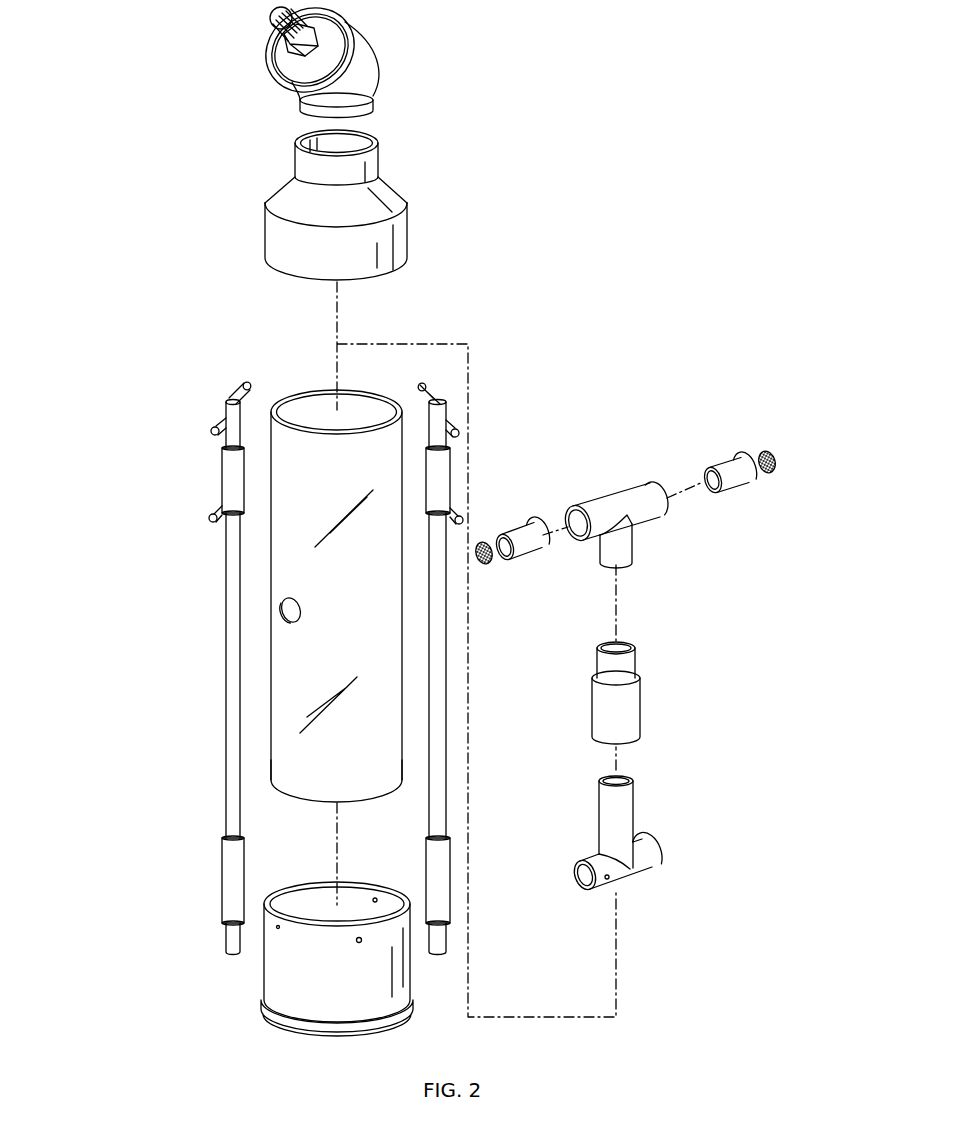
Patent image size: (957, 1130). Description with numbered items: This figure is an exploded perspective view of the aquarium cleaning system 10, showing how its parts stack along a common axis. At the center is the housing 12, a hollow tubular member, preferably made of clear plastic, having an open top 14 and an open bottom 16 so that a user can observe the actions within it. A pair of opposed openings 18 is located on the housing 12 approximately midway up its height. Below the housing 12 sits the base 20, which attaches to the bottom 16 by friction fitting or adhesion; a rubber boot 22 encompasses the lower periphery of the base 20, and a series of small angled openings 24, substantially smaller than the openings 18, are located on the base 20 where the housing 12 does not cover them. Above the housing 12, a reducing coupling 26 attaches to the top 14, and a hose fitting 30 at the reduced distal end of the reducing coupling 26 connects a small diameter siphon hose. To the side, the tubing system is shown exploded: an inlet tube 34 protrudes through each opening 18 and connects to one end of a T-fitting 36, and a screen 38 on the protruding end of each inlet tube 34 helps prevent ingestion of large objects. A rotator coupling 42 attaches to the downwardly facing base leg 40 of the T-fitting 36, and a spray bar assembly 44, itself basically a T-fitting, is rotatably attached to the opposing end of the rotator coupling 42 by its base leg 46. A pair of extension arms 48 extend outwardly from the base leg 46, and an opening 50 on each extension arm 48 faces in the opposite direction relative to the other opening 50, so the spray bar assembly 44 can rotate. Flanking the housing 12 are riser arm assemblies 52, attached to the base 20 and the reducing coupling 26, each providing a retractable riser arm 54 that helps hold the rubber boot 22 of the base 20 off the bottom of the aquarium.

The aquarium cleaning system 10 is at (140, 600).
The housing 12 is at (304, 569).
The open top 14 is at (385, 395).
The open bottom 16 is at (280, 790).
The opposed openings 18 is at (287, 623).
The base 20 is at (315, 950).
The rubber boot 22 is at (302, 1027).
The angled openings 24 is at (375, 900).
The reducing coupling 26 is at (407, 200).
The hose fitting 30 is at (373, 82).
The inlet tube 34 is at (521, 537).
The T-fitting 36 is at (636, 492).
The screen 38 is at (486, 567).
The base leg 40 is at (633, 540).
The rotator coupling 42 is at (640, 705).
The spray bar assembly 44 is at (624, 854).
The base leg 46 is at (612, 807).
The extension arms 48 is at (652, 860).
The opening 50 is at (612, 880).
The riser arm assembly 52 is at (193, 668).
The retractable riser arm 54 is at (228, 938).